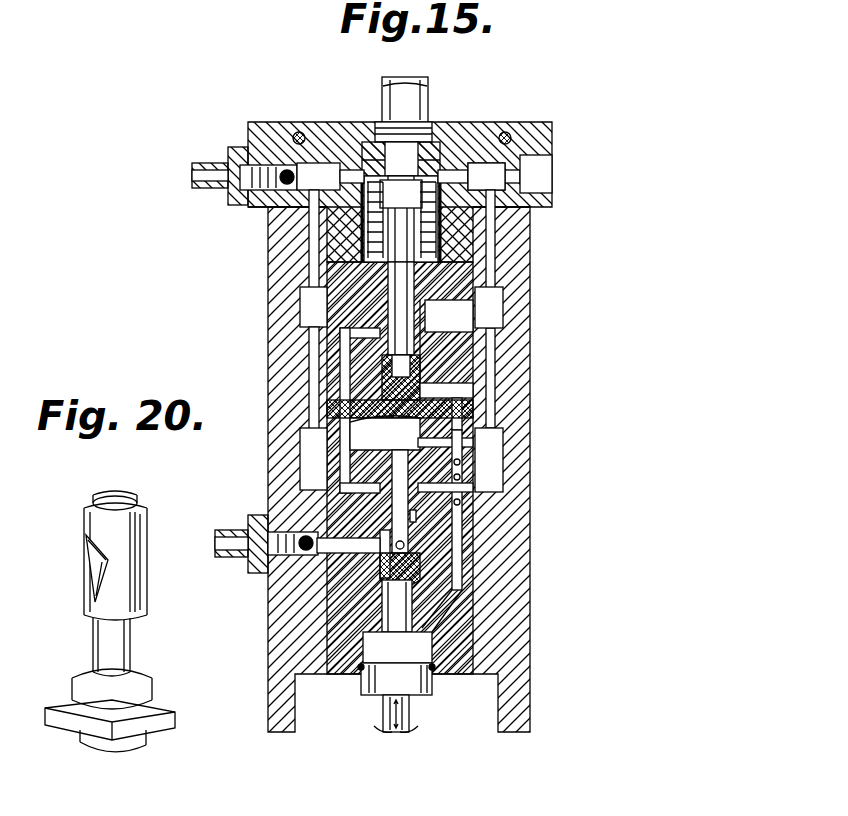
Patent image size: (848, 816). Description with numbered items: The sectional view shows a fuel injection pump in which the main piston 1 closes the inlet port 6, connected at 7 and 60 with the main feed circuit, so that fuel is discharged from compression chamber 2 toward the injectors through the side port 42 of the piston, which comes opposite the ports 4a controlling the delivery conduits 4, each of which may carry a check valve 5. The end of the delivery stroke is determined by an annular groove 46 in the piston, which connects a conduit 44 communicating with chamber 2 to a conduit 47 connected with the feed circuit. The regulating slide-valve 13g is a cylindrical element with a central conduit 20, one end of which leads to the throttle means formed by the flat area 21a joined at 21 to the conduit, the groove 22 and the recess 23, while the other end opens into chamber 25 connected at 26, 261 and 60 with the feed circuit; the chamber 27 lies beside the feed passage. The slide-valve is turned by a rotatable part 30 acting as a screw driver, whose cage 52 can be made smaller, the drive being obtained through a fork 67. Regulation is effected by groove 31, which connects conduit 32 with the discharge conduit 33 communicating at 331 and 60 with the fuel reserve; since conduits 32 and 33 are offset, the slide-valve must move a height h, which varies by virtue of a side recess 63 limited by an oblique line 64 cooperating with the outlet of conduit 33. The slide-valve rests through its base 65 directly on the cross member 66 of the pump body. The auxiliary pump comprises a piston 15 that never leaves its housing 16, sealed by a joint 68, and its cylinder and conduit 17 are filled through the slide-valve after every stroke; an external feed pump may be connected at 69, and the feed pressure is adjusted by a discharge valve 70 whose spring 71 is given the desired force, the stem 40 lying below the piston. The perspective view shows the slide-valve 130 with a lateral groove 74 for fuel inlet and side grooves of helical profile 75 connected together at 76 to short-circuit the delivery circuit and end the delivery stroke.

In FIG. 15, the main piston 1 is at (405, 618).
In FIG. 15, the compression chamber 2 is at (386, 434).
In FIG. 15, the delivery conduit 4 is at (240, 541).
In FIG. 15, the port 4a is at (355, 541).
In FIG. 15, the check valve 5 is at (250, 560).
In FIG. 15, the inlet port 6 is at (420, 481).
In FIG. 15, the feed circuit connection 7 is at (492, 483).
In FIG. 15, the regulating slide-valve 13g is at (478, 276).
In FIG. 15, the auxiliary pump piston 15 is at (377, 690).
In FIG. 15, the auxiliary pump housing 16 is at (374, 652).
In FIG. 15, the conduit 17 is at (456, 581).
In FIG. 15, the central conduit 20 is at (369, 281).
In FIG. 15, the throttle connection 21 is at (410, 375).
In FIG. 15, the flat area 21a is at (444, 392).
In FIG. 15, the groove 22 is at (445, 446).
In FIG. 15, the recess 23 is at (460, 392).
In FIG. 15, the chamber 25 is at (356, 236).
In FIG. 15, the chamber connection 26 is at (446, 170).
In FIG. 15, the conduit connection 261 is at (488, 170).
In FIG. 15, the chamber 27 is at (302, 176).
In FIG. 15, the rotatable part 30 is at (403, 91).
In FIG. 15, the groove 31 is at (400, 337).
In FIG. 15, the conduit 32 is at (345, 341).
In FIG. 15, the discharge conduit 33 is at (460, 306).
In FIG. 15, the discharge communication 331 is at (498, 316).
In FIG. 15, the stem 40 is at (456, 554).
In FIG. 15, the side port 42 is at (378, 566).
In FIG. 15, the conduit 44 is at (343, 457).
In FIG. 15, the annular groove 46 is at (415, 517).
In FIG. 15, the conduit 47 is at (466, 491).
In FIG. 15, the cage 52 is at (532, 226).
In FIG. 15, the feed circuit connection 60 is at (492, 247).
In FIG. 15, the side recess 63 is at (488, 356).
In FIG. 15, the oblique line 64 is at (384, 312).
In FIG. 15, the base 65 is at (400, 395).
In FIG. 15, the cross member 66 is at (360, 410).
In FIG. 15, the fork 67 is at (372, 152).
In FIG. 15, the joint 68 is at (432, 669).
In FIG. 15, the feed pump connection 69 is at (540, 167).
In FIG. 15, the discharge valve 70 is at (238, 150).
In FIG. 15, the spring 71 is at (232, 165).
In FIG. 15, the height h is at (446, 341).
In FIG. 20, the groove 74 is at (96, 642).
In FIG. 20, the oblique or helical profile 75 is at (142, 545).
In FIG. 20, the groove connection 76 is at (98, 562).
In FIG. 20, the slide-valve 130 is at (122, 611).